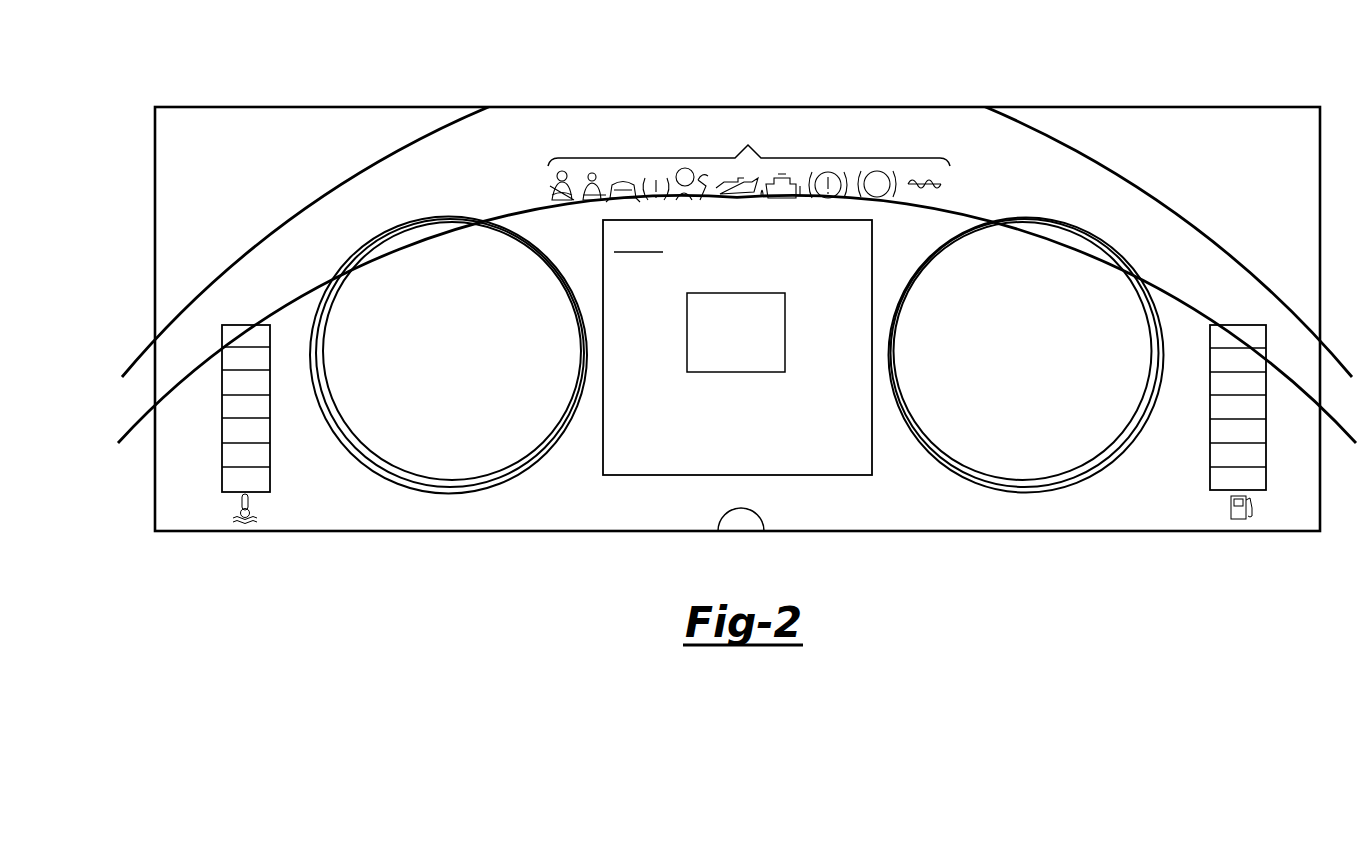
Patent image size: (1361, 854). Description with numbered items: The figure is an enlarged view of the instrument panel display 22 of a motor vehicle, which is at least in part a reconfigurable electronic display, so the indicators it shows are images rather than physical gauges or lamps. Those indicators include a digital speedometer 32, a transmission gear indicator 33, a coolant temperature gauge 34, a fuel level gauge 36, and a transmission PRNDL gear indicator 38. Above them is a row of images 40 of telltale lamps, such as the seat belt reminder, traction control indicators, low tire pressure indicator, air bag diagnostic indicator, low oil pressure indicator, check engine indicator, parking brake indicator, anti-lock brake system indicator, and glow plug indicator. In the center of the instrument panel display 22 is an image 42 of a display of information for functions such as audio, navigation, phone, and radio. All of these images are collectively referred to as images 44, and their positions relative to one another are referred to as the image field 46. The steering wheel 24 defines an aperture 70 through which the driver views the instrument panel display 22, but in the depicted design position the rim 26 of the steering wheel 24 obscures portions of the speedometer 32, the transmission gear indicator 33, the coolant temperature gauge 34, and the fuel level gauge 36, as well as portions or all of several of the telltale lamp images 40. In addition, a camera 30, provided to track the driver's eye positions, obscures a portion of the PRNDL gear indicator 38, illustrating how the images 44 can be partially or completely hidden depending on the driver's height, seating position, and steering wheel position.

The instrument panel display 22 is at (1154, 100).
The steering wheel 24 is at (408, 135).
The rim 26 is at (326, 197).
The camera 30 is at (750, 527).
The speedometer 32 is at (462, 466).
The transmission gear indicator 33 is at (1041, 466).
The coolant temperature gauge 34 is at (222, 455).
The fuel level gauge 36 is at (1210, 455).
The transmission PRNDL gear indicator 38 is at (680, 503).
The images of telltale lamps 40 is at (749, 165).
The image of a display of information 42 is at (873, 470).
The images 44 is at (537, 493).
The image field 46 is at (582, 493).
The aperture 70 is at (307, 493).